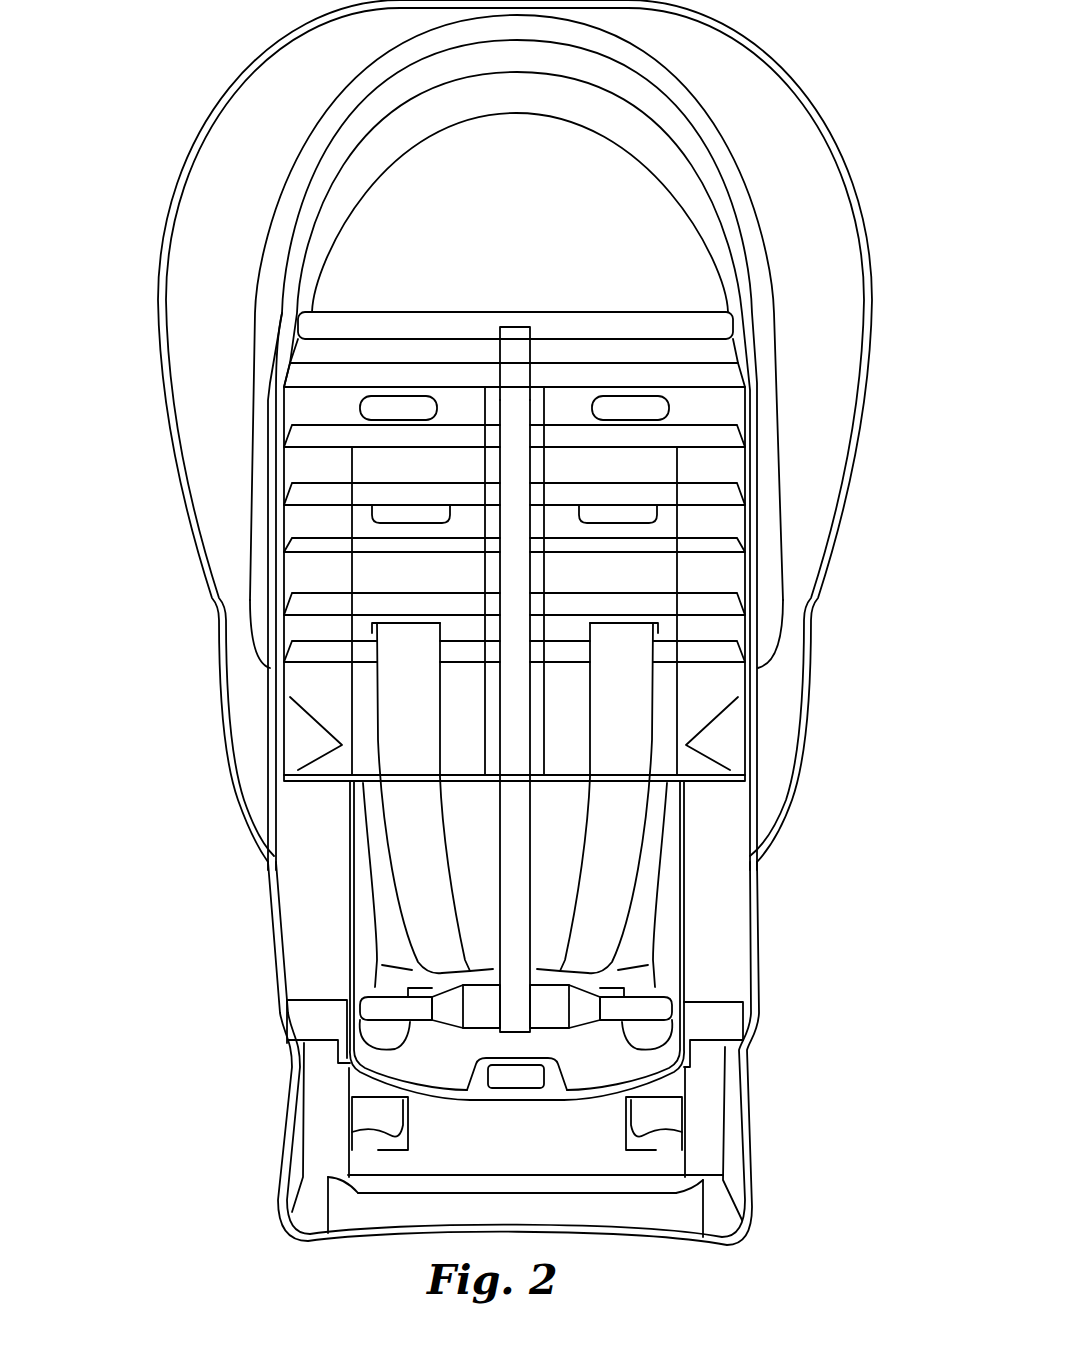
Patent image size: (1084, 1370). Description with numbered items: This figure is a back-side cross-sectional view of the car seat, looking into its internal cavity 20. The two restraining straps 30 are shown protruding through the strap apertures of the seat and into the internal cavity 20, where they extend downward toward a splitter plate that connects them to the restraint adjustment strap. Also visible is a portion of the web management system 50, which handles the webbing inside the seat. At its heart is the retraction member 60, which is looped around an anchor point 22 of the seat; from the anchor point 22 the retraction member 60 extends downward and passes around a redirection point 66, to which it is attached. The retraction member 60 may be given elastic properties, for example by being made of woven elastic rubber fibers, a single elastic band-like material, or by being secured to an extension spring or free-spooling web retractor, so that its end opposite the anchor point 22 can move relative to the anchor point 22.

The internal cavity 20 is at (726, 866).
The anchor point 22 is at (518, 333).
The restraining straps 30 is at (405, 722).
The web management system 50 is at (432, 1047).
The retraction member 60 is at (513, 573).
The redirection point 66 is at (548, 1008).